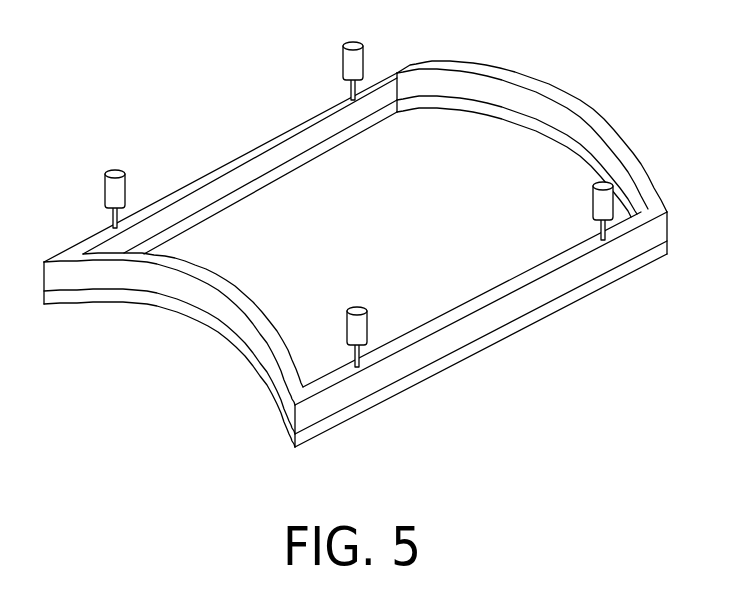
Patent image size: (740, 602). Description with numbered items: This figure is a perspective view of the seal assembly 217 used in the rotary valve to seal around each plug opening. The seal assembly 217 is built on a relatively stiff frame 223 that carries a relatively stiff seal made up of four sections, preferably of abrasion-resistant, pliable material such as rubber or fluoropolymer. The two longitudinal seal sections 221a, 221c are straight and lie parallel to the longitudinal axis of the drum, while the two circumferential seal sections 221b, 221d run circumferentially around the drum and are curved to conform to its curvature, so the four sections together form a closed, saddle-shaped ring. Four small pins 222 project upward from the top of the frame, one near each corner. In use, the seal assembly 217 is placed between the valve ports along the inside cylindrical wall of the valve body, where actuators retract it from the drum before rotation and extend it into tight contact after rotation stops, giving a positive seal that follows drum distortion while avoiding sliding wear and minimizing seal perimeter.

The seal assembly 217 is at (373, 227).
The longitudinal seal section 221a is at (473, 354).
The circumferential seal section 221b is at (550, 139).
The longitudinal seal section 221c is at (243, 196).
The circumferential seal section 221d is at (227, 351).
The positioning pins 222 is at (365, 47).
The frame 223 is at (580, 100).